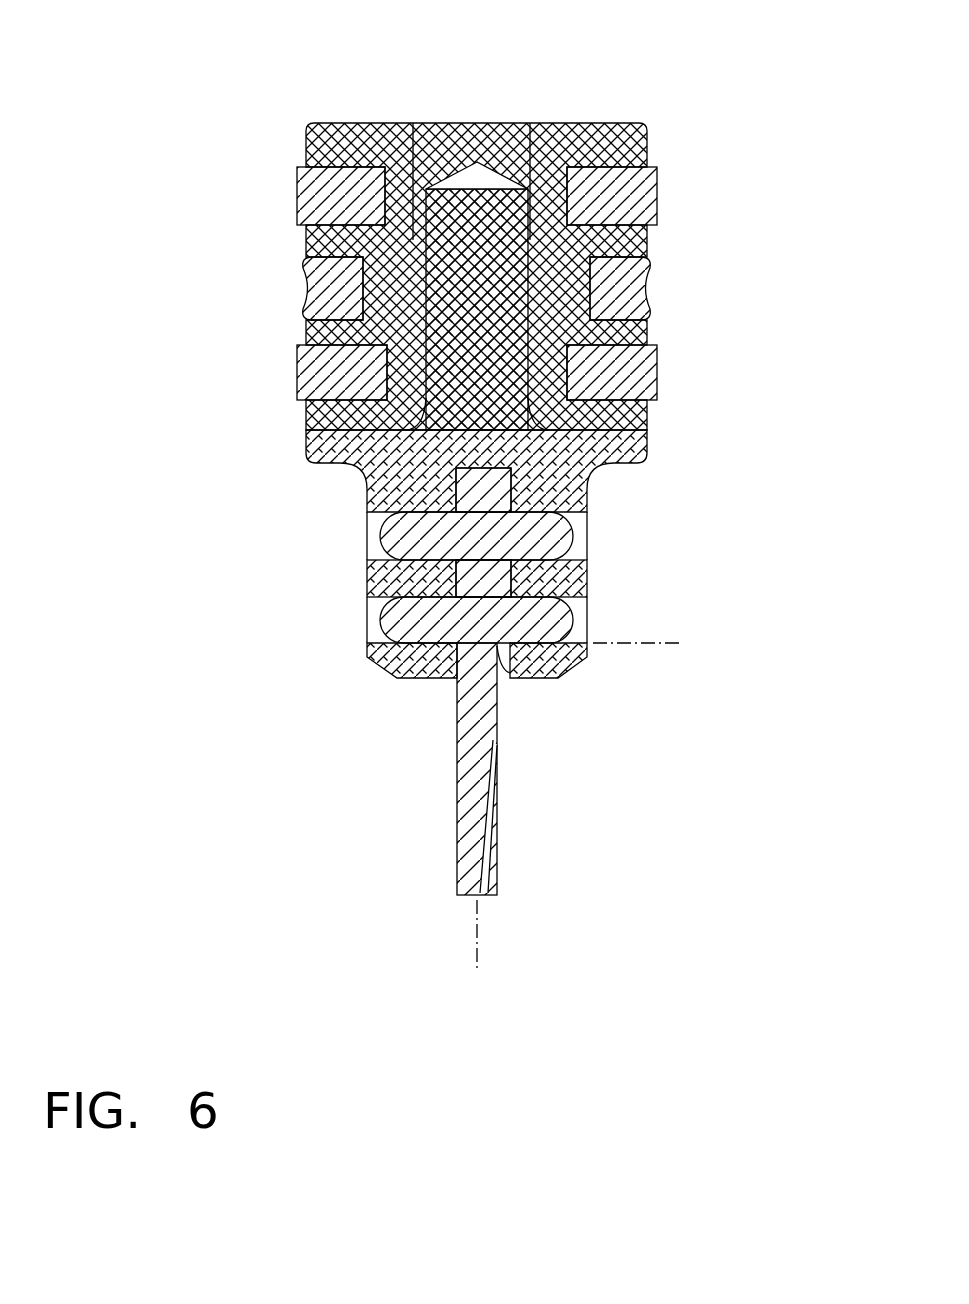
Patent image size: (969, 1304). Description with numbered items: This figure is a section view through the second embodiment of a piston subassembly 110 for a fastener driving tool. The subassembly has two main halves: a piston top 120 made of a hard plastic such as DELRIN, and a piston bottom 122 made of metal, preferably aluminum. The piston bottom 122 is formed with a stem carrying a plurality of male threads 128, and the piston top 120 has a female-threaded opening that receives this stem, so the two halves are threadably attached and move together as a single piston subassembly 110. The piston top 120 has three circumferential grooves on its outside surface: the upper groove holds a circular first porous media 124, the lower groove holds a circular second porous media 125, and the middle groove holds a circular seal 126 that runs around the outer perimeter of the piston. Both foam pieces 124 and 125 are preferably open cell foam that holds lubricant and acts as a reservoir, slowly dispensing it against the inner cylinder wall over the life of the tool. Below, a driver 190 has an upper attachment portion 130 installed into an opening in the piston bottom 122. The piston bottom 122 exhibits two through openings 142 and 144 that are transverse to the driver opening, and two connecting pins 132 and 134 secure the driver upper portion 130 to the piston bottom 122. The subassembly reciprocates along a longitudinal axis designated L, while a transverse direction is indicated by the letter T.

The piston subassembly 110 is at (266, 98).
The piston top 120 is at (608, 123).
The piston bottom 122 is at (640, 445).
The first porous media 124 is at (657, 187).
The second porous media 125 is at (657, 347).
The circular seal 126 is at (643, 260).
The male threads 128 is at (530, 123).
The upper attachment portion 130 is at (483, 728).
The connecting pin 132 is at (560, 538).
The connecting pin 134 is at (558, 622).
The through opening 142 is at (368, 518).
The through opening 144 is at (368, 600).
The driver 190 is at (465, 830).
The transverse axis T is at (660, 646).
The longitudinal axis L is at (478, 915).